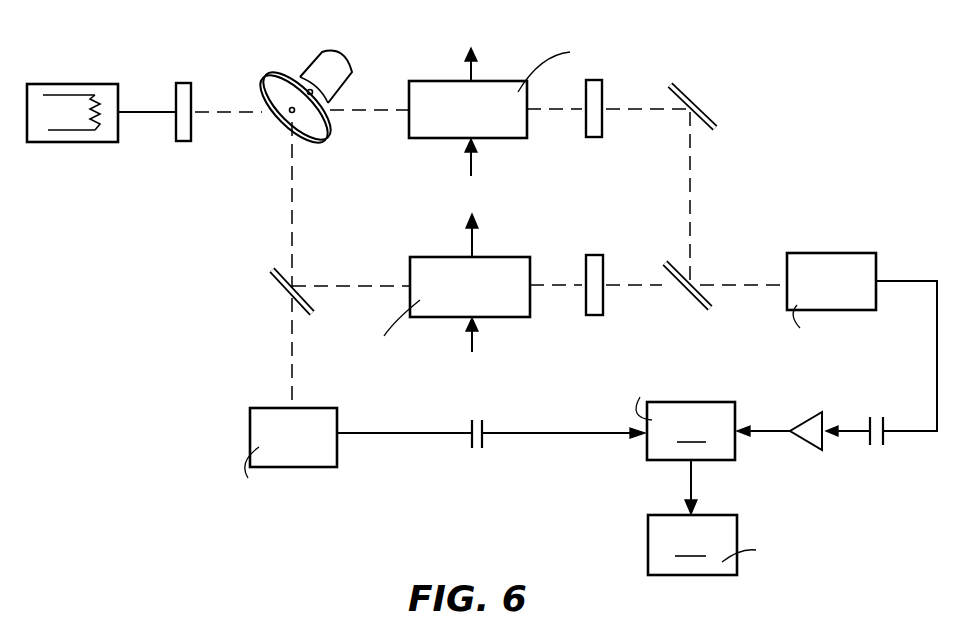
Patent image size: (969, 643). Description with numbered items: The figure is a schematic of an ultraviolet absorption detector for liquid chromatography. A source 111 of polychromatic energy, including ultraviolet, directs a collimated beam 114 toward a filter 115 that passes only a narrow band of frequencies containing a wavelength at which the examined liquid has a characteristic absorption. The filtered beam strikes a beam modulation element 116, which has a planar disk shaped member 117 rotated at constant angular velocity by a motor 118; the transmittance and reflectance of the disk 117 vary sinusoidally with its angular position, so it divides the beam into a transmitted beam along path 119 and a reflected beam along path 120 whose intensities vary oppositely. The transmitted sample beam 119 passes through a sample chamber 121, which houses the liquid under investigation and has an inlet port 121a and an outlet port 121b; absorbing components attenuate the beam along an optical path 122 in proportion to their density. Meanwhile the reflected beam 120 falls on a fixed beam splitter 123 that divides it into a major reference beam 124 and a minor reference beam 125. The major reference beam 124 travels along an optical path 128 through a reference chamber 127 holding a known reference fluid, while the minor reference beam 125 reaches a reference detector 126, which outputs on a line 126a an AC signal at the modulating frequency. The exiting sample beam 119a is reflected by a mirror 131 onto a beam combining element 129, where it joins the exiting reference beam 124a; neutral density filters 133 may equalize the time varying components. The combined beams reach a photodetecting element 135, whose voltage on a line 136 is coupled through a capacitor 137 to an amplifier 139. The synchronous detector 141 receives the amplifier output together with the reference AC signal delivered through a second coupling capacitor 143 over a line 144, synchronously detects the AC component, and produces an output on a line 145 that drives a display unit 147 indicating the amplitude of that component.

The source 111 is at (97, 84).
The collimated beam 114 is at (157, 113).
The filter 115 is at (190, 141).
The beam modulation element 116 is at (319, 92).
The planar disk shaped member 117 is at (318, 137).
The motor 118 is at (352, 72).
The transmitted beam path 119 is at (349, 112).
The exiting sample beam 119a is at (545, 107).
The reflected beam path 120 is at (298, 222).
The sample chamber 121 is at (533, 97).
The inlet port 121a is at (475, 156).
The outlet port 121b is at (476, 65).
The optical path 122 is at (486, 112).
The fixed beam splitter 123 is at (312, 308).
The major reference beam 124 is at (477, 298).
The exiting reference beam 124a is at (568, 272).
The minor reference beam 125 is at (292, 326).
The reference detector 126 is at (250, 428).
The line 126a is at (358, 435).
The reference chamber 127 is at (514, 318).
The optical path 128 is at (490, 285).
The beam combining element 129 is at (700, 290).
The mirror 131 is at (704, 112).
The filters 133 is at (596, 255).
The photodetecting element 135 is at (822, 253).
The line 136 is at (900, 281).
The capacitor 137 is at (883, 443).
The amplifier 139 is at (804, 446).
The synchronous detector 141 is at (708, 408).
The second coupling capacitor 143 is at (485, 432).
The line 144 is at (573, 432).
The line 145 is at (690, 476).
The display unit 147 is at (740, 551).